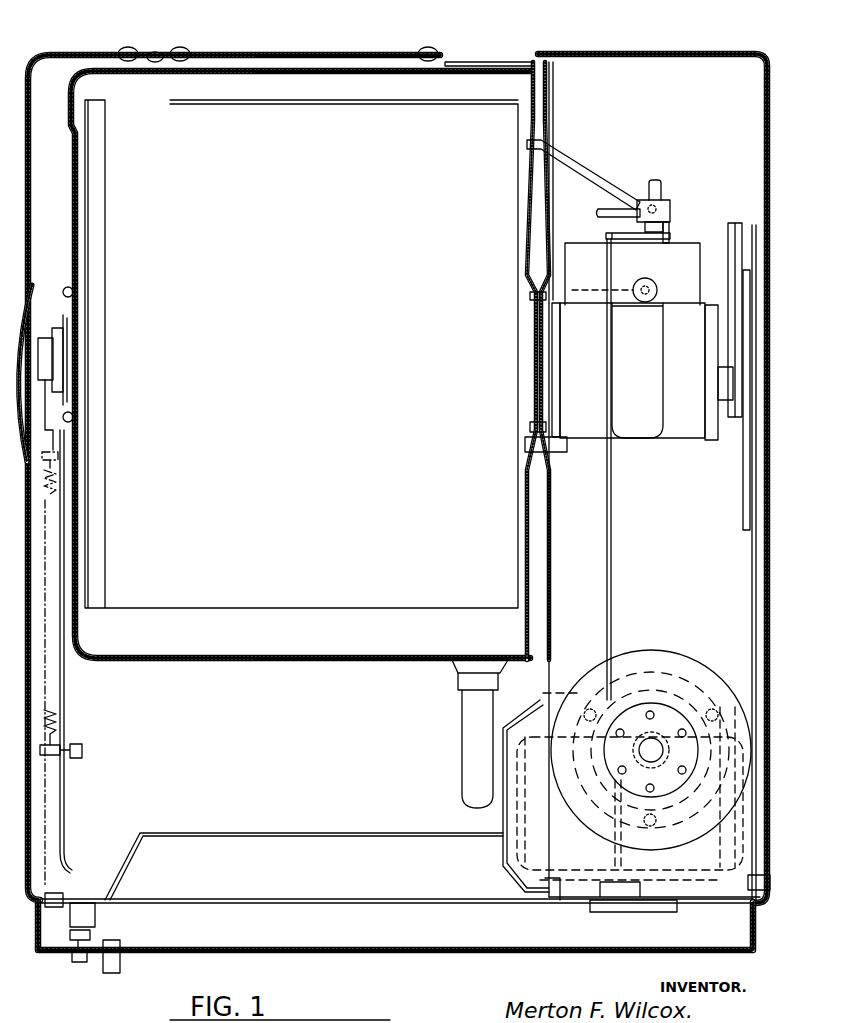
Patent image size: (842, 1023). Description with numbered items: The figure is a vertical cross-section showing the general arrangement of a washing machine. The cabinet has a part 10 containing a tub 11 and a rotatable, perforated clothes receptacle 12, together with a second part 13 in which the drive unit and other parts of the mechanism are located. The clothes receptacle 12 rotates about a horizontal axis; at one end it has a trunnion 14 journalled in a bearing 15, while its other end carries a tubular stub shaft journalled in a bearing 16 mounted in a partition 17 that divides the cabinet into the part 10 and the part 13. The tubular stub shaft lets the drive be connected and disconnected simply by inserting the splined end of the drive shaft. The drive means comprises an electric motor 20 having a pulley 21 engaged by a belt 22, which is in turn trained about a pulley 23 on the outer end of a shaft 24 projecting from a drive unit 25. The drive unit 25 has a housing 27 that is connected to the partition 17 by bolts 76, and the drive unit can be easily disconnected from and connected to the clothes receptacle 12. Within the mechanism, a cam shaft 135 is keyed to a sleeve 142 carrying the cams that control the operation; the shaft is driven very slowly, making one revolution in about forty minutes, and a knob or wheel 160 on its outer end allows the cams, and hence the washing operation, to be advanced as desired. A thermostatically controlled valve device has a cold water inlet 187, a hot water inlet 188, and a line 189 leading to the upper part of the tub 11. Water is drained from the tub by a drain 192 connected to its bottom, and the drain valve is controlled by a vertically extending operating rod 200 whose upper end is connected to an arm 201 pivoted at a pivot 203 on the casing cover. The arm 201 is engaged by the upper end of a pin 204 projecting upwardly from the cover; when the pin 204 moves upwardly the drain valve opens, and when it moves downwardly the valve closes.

The part 10 is at (509, 54).
The tub 11 is at (316, 675).
The clothes receptacle 12 is at (148, 105).
The second part 13 is at (600, 46).
The trunnion 14 is at (40, 355).
The bearing 15 is at (70, 360).
The bearing 16 is at (530, 375).
The partition 17 is at (525, 480).
The electric motor 20 is at (552, 705).
The pulley 21 is at (752, 725).
The belt 22 is at (748, 616).
The pulley 23 is at (742, 494).
The shaft 24 is at (720, 382).
The drive unit 25 is at (690, 428).
The housing 27 is at (591, 423).
The bolts 76 is at (550, 452).
The cam shaft 135 is at (602, 289).
The sleeve 142 is at (735, 318).
The knob or wheel 160 is at (640, 300).
The cold water inlet 187 is at (600, 218).
The hot water inlet 188 is at (662, 193).
The line 189 is at (573, 158).
The drain 192 is at (467, 725).
The operating rod 200 is at (613, 566).
The arm 201 is at (626, 245).
The pivot 203 is at (668, 238).
The pin 204 is at (648, 250).